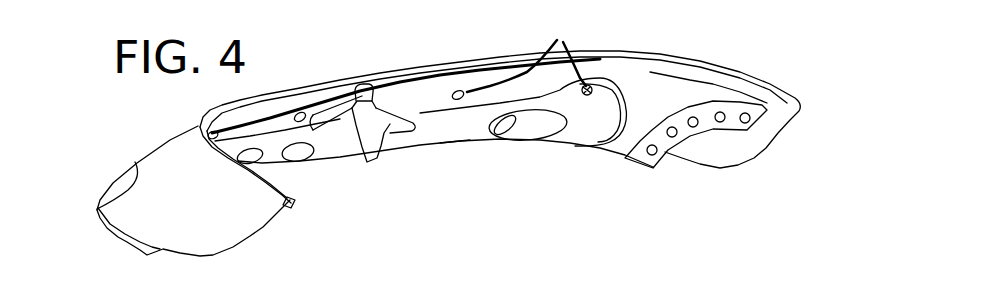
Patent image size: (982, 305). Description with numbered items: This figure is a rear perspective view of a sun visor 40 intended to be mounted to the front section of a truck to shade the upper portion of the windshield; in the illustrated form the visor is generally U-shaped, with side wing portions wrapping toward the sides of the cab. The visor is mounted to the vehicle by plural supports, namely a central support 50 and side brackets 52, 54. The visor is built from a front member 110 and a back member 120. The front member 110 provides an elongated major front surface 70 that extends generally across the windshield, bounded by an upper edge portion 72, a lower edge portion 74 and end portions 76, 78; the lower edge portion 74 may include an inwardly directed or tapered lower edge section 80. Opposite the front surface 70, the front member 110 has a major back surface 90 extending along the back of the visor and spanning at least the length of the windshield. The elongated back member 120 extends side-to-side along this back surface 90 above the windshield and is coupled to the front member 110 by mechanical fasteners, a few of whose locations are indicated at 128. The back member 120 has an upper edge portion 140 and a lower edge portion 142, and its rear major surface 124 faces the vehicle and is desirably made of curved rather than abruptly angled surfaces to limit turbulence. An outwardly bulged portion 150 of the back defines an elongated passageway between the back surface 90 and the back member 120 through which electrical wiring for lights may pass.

The sun visor 40 is at (755, 77).
The central support 50 is at (375, 140).
The side bracket 52 is at (289, 212).
The side bracket 54 is at (683, 130).
The front surface 70 is at (377, 77).
The upper edge portion 72 is at (395, 77).
The lower edge portion 74 is at (428, 143).
The end portion 76 is at (757, 140).
The end portion 78 is at (227, 237).
The lower edge section 80 is at (97, 219).
The back surface 90 is at (493, 70).
The front member 110 is at (168, 142).
The back member 120 is at (522, 104).
The rear major surface 124 is at (475, 100).
The mechanical fasteners 128 is at (521, 56).
The upper edge portion 140 is at (433, 93).
The lower edge portion 142 is at (453, 137).
The outwardly bulged portion 150 is at (307, 148).